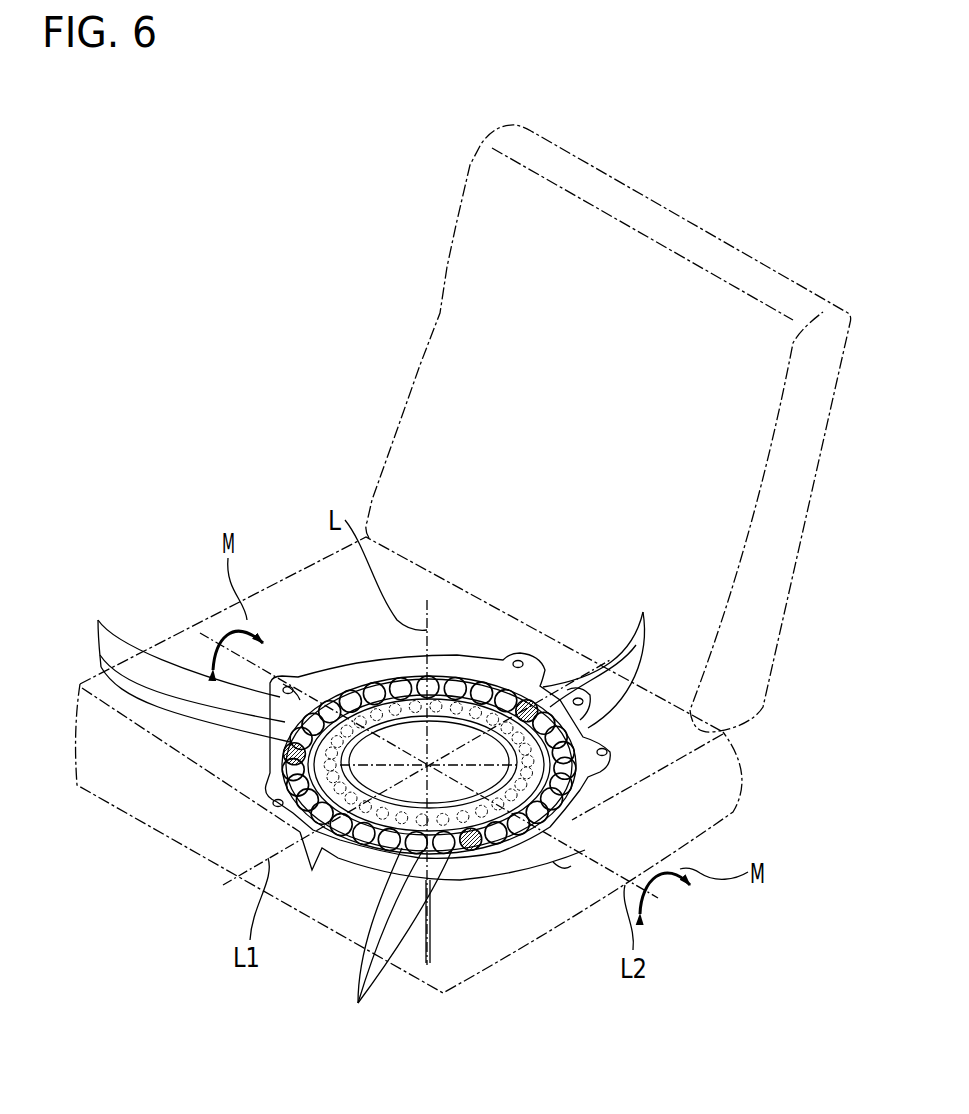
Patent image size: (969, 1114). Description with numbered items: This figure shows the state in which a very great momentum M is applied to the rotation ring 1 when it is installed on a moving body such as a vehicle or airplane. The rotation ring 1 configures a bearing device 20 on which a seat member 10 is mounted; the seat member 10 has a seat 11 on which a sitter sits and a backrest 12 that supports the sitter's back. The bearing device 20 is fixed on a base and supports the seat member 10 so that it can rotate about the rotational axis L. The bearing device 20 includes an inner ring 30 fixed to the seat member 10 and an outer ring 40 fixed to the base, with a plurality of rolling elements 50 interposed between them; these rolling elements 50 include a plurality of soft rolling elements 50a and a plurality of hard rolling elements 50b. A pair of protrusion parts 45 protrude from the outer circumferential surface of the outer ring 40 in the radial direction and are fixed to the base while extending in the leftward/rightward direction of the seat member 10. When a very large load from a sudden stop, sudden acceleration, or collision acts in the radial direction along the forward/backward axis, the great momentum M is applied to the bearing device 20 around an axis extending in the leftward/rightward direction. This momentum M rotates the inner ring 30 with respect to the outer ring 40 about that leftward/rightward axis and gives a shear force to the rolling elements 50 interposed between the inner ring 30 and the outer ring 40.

The rotation ring 1 is at (225, 305).
The seat member 10 is at (84, 679).
The seat 11 is at (212, 613).
The backrest 12 is at (433, 292).
The bearing device 20 is at (338, 650).
The inner ring 30 is at (578, 762).
The outer ring 40 is at (575, 793).
The protrusion parts 45 is at (295, 686).
The rolling elements 50 is at (402, 785).
The soft rolling elements 50a is at (402, 810).
The hard rolling elements 50b is at (528, 698).